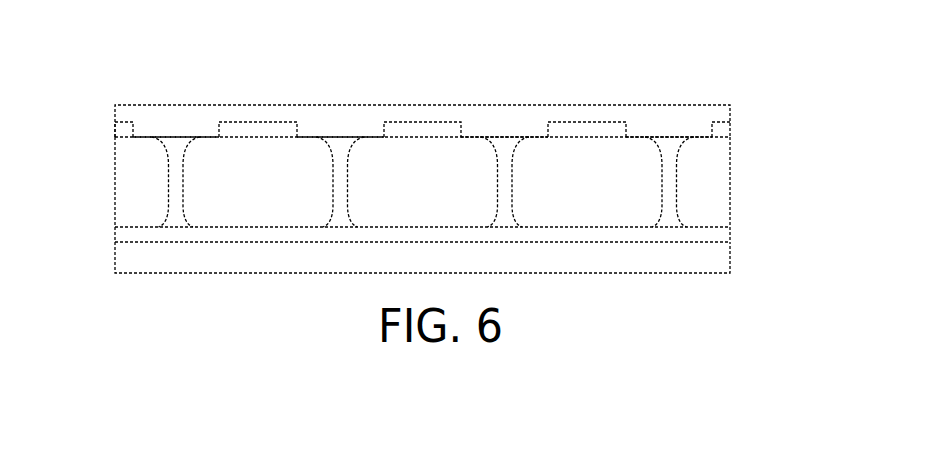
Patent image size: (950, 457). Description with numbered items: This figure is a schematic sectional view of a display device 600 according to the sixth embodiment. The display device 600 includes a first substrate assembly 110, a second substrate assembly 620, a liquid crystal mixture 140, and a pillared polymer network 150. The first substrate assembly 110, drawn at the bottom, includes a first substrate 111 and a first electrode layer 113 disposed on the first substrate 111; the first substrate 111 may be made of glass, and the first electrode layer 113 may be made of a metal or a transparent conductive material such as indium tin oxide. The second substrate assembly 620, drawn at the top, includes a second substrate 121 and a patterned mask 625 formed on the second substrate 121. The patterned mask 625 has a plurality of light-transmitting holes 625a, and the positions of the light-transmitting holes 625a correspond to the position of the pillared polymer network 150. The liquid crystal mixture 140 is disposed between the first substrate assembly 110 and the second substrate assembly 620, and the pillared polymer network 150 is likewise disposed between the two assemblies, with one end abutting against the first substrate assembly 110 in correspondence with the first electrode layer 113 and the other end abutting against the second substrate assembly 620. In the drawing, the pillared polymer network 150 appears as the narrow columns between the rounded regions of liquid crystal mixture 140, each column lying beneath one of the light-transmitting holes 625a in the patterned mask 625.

The display device 600 is at (75, 38).
The light-transmitting holes 625a is at (175, 116).
The second substrate 121 is at (723, 113).
The patterned mask 625 is at (723, 130).
The second substrate assembly 620 is at (488, 119).
The liquid crystal mixture 140 is at (718, 180).
The pillared polymer network 150 is at (168, 185).
The first electrode layer 113 is at (718, 234).
The first substrate 111 is at (718, 255).
The first substrate assembly 110 is at (488, 247).